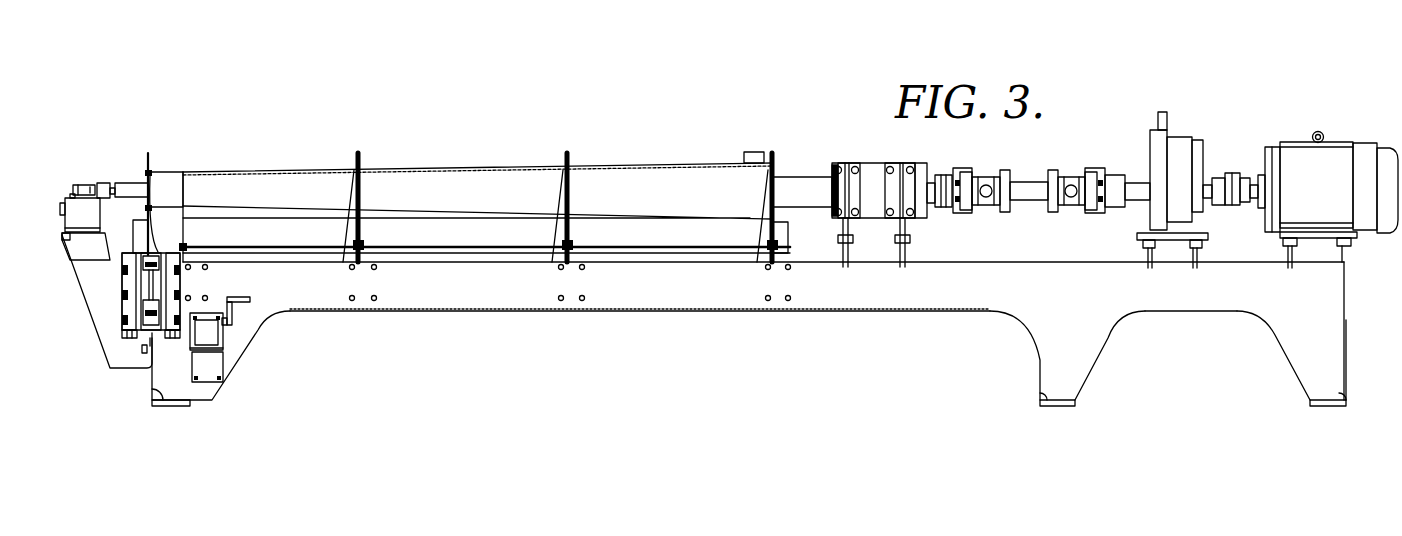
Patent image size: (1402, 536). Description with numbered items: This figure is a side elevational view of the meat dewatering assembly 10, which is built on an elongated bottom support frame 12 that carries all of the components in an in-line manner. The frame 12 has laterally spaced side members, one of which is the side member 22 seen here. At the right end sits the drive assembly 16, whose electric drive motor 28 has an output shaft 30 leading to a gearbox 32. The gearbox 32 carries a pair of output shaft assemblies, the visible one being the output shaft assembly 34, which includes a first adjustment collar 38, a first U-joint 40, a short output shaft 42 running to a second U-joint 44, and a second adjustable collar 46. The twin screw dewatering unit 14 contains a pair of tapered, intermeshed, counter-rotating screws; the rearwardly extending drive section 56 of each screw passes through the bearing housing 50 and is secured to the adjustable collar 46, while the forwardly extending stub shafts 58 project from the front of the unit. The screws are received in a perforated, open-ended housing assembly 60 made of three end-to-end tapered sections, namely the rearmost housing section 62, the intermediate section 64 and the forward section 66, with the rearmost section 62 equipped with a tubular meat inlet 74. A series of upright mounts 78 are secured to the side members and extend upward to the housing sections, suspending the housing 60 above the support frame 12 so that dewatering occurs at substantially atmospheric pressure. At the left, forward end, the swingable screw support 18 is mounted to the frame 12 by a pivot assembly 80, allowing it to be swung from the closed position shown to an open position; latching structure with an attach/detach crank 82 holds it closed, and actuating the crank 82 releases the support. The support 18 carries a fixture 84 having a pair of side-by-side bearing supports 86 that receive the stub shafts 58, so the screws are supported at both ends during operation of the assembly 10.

The meat dewatering assembly 10 is at (1255, 87).
The bottom support frame 12 is at (650, 318).
The twin screw dewatering unit 14 is at (424, 158).
The drive assembly 16 is at (1132, 95).
The swingable screw support 18 is at (88, 324).
The side member 22 is at (875, 297).
The electric drive motor 28 is at (1340, 150).
The output shaft 30 is at (1233, 180).
The gearbox 32 is at (1180, 143).
The output shaft assembly 34 is at (1073, 142).
The first adjustment collar 38 is at (1112, 178).
The first U-joint 40 is at (1063, 212).
The short output shaft 42 is at (1028, 188).
The second U-joint 44 is at (988, 208).
The second adjustable collar 46 is at (943, 178).
The bearing housing 50 is at (873, 170).
The drive section 56 is at (810, 177).
The stub shaft 58 is at (135, 190).
The housing assembly 60 is at (599, 126).
The rearmost housing section 62 is at (688, 178).
The housing section 64 is at (520, 187).
The housing section 66 is at (311, 180).
The tubular meat inlet 74 is at (753, 153).
The upright mount 78 is at (345, 230).
The pivot assembly 80 is at (133, 343).
The attach/detach crank 82 is at (237, 344).
The fixture 84 is at (73, 222).
The bearing support 86 is at (88, 192).